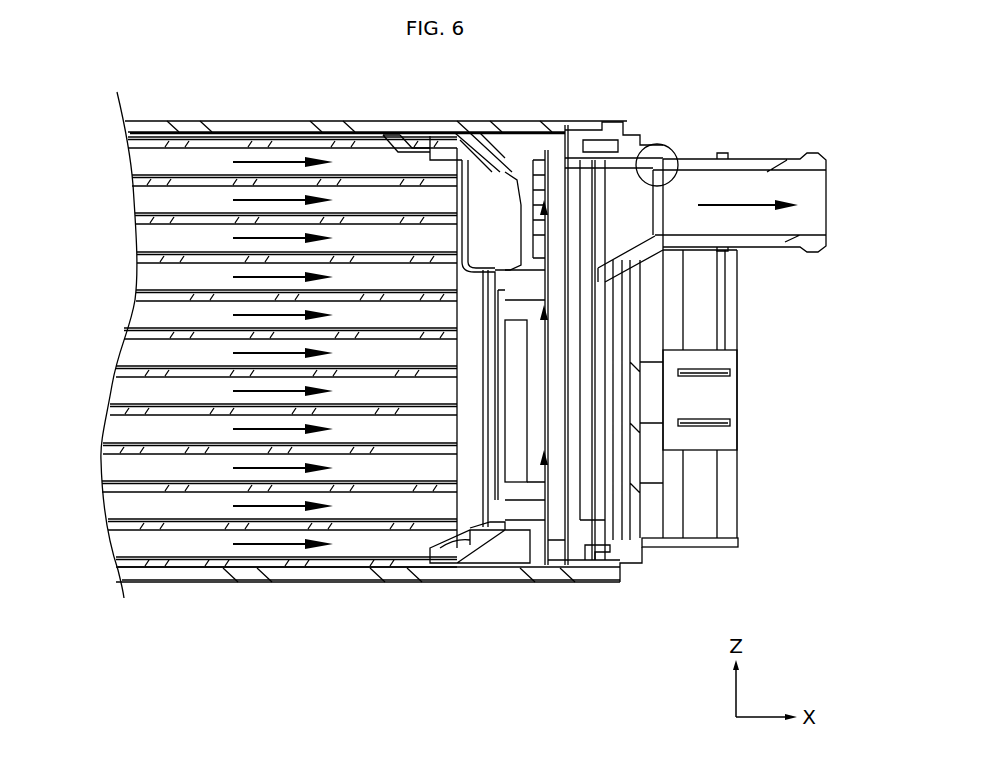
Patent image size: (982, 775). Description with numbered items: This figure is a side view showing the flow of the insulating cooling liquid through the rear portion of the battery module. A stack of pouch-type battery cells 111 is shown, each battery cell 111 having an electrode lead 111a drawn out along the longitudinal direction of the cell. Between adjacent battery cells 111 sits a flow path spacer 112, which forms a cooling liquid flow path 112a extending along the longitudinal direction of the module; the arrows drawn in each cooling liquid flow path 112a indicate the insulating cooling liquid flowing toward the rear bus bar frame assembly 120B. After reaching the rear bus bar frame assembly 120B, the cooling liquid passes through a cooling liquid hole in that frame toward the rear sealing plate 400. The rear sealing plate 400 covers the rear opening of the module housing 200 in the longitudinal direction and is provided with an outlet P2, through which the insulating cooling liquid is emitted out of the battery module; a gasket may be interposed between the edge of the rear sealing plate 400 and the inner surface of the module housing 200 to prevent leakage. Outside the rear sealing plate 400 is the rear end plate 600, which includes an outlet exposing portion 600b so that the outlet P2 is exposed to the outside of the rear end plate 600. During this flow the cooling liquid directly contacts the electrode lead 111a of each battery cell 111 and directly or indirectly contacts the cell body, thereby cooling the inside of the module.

The battery cell 111 is at (178, 546).
The electrode lead 111a is at (517, 458).
The flow path spacer 112 is at (128, 333).
The cooling liquid flow path 112a is at (158, 280).
The rear bus bar frame assembly 120B is at (467, 553).
The module housing 200 is at (391, 121).
The rear sealing plate 400 is at (596, 540).
The rear end plate 600 is at (703, 547).
The outlet exposing portion 600b is at (676, 160).
The outlet P2 is at (756, 159).